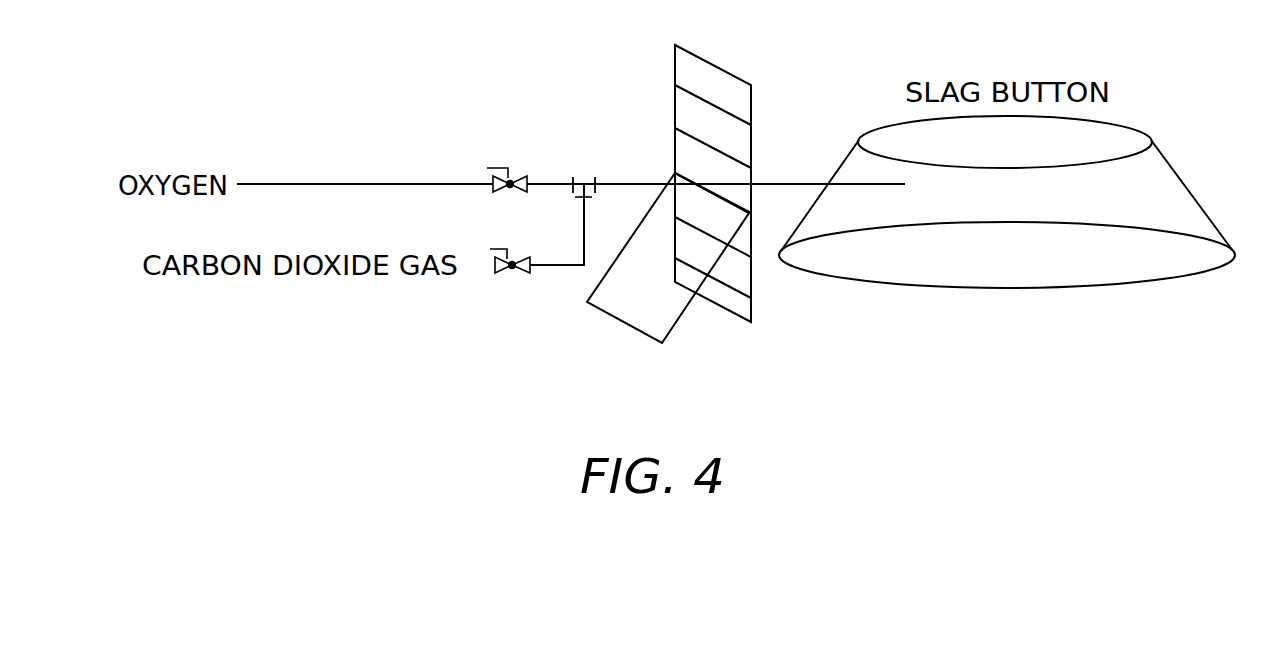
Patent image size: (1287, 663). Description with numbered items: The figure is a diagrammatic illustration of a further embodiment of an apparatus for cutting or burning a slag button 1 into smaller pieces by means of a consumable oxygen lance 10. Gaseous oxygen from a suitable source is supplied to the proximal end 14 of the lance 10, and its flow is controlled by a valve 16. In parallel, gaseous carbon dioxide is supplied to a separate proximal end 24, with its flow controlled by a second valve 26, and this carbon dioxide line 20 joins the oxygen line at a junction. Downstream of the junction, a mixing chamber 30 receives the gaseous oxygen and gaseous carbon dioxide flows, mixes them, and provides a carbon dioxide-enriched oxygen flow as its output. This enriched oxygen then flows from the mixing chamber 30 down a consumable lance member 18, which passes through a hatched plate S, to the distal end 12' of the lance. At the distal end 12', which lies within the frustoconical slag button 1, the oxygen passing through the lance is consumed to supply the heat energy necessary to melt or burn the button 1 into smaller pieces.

The button 1 is at (1210, 190).
The consumable oxygen lance 10 is at (548, 178).
The distal end 12' is at (854, 252).
The proximal end 14 is at (408, 182).
The valve 16 is at (512, 179).
The consumable lance member 18 is at (771, 182).
The carbon dioxide gas line 20 is at (555, 276).
The proximal end 24 is at (489, 267).
The valve 26 is at (513, 275).
The mixing chamber 30 is at (584, 182).
The hatched shield plate S is at (716, 52).